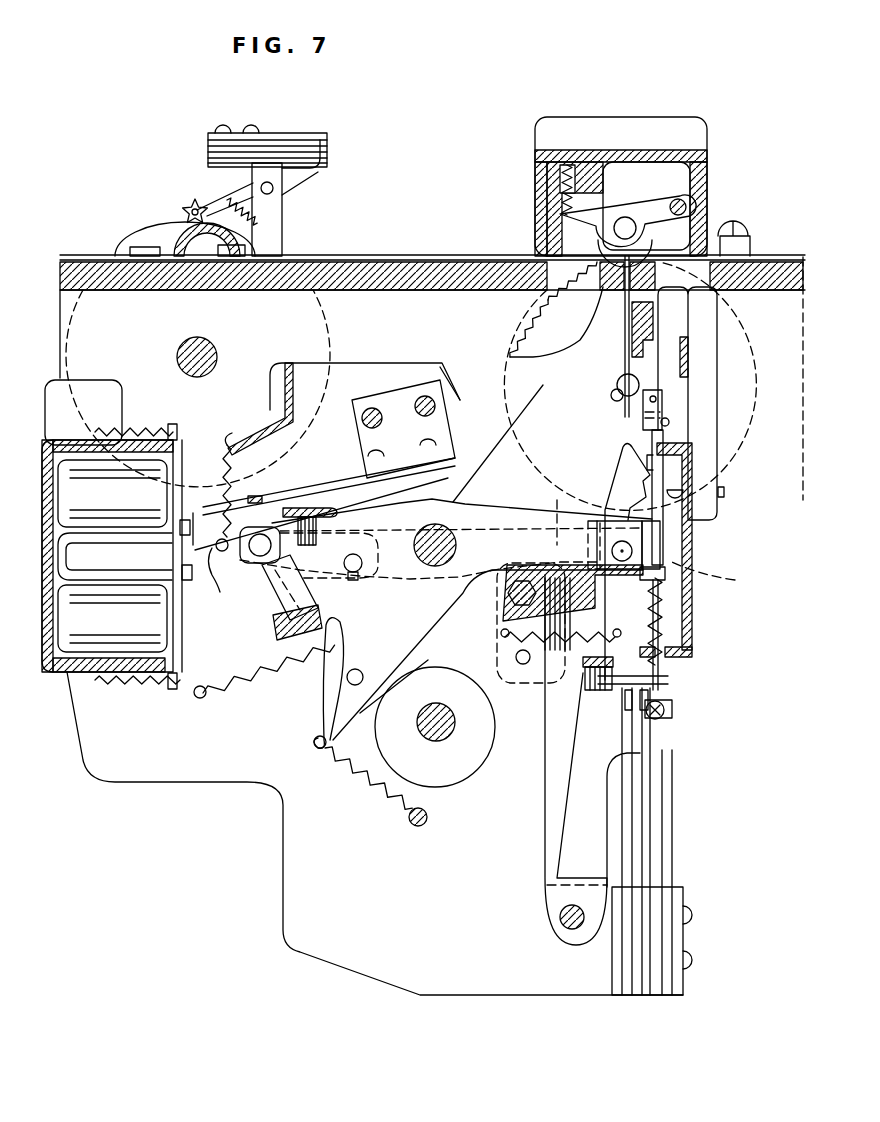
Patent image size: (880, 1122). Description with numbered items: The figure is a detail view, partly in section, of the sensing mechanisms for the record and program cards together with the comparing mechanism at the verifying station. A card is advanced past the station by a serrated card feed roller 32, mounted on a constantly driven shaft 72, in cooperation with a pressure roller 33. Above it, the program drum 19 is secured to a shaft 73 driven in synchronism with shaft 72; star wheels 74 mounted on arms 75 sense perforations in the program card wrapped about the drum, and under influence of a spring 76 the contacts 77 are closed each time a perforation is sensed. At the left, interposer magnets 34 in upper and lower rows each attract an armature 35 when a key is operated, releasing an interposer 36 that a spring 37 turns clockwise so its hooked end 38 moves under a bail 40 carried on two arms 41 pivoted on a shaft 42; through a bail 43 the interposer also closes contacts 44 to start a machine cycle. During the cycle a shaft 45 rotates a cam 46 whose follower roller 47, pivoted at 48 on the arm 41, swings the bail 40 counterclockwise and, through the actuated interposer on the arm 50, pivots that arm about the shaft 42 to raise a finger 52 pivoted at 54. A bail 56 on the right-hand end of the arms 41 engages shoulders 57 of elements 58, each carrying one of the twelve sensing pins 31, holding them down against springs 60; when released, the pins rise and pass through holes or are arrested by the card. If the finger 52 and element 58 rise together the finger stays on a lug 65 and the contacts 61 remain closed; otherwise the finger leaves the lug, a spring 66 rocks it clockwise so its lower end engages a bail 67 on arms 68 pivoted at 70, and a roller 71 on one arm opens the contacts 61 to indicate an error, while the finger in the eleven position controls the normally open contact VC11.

The program drum 19 is at (155, 232).
The sensing pins 31 is at (622, 357).
The serrated card feed roller 32 is at (515, 320).
The pressure roller 33 is at (625, 200).
The interposer magnet 34 is at (124, 494).
The armature 35 is at (182, 445).
The interposer 36 is at (215, 570).
The spring 37 is at (235, 455).
The hooked end 38 is at (300, 598).
The bail 40 is at (265, 595).
The arms 41 is at (425, 634).
The shaft 42 is at (458, 540).
The bail 43 is at (245, 508).
The contacts 44 is at (268, 480).
The shaft 45 is at (455, 722).
The cam 46 is at (470, 768).
The cam follower roller 47 is at (318, 680).
The pivot 48 is at (360, 670).
The arm 50 is at (557, 505).
The finger 52 is at (620, 467).
The pivot 54 is at (632, 551).
The bail 56 is at (718, 576).
The shoulders 57 is at (660, 575).
The elements 58 is at (665, 530).
The springs 60 is at (663, 625).
The contacts 61 is at (660, 758).
The lug 65 is at (625, 447).
The spring 66 is at (580, 655).
The bail 67 is at (583, 683).
The arms 68 is at (570, 830).
The pivot 70 is at (560, 917).
The roller 71 is at (665, 705).
The shaft 72 is at (614, 385).
The shaft 73 is at (215, 350).
The star wheels 74 is at (185, 205).
The arms 75 is at (305, 178).
The spring 76 is at (228, 200).
The contacts 77 is at (332, 150).
The verify contact VC11 is at (645, 680).